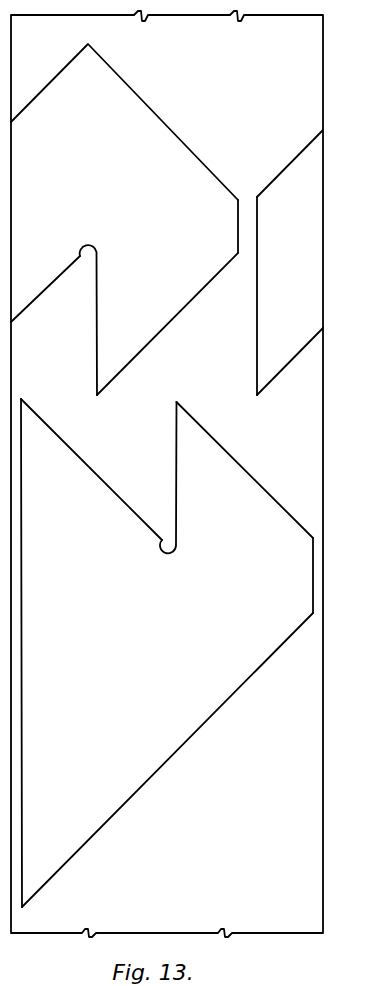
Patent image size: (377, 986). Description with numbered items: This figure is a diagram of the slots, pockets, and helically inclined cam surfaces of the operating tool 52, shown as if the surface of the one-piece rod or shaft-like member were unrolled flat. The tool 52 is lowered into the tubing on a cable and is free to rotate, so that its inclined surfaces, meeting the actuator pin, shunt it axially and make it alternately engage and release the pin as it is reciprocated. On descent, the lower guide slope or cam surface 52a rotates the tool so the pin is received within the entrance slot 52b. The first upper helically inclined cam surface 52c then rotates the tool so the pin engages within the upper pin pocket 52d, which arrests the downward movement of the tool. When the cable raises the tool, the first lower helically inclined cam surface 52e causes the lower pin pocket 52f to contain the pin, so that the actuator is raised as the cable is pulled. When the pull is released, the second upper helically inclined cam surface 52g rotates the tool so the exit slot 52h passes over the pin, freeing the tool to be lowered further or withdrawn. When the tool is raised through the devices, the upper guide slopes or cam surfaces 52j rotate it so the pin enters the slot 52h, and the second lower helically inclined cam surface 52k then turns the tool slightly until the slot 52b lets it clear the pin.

The operating tool 52 is at (237, 57).
The lower guide slope or cam surface 52a is at (212, 715).
The entrance slot 52b is at (21, 593).
The first upper helically inclined cam surface 52c is at (37, 297).
The upper pin pocket 52d is at (100, 252).
The first lower helically inclined cam surface 52e is at (89, 467).
The lower pin pocket 52f is at (178, 545).
The second upper helically inclined cam surface 52g is at (193, 298).
The exit slot 52h is at (252, 232).
The upper guide slopes or cam surfaces 52j is at (134, 93).
The second lower helically inclined cam surface 52k is at (242, 467).